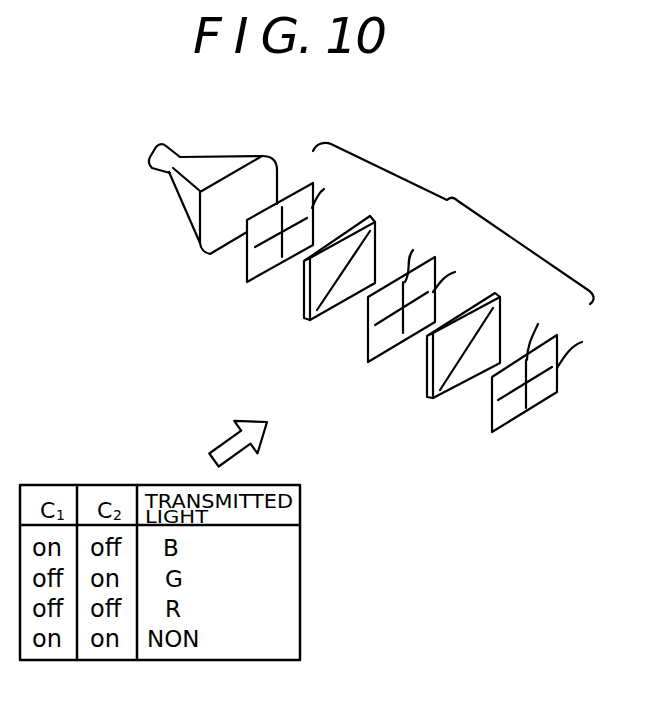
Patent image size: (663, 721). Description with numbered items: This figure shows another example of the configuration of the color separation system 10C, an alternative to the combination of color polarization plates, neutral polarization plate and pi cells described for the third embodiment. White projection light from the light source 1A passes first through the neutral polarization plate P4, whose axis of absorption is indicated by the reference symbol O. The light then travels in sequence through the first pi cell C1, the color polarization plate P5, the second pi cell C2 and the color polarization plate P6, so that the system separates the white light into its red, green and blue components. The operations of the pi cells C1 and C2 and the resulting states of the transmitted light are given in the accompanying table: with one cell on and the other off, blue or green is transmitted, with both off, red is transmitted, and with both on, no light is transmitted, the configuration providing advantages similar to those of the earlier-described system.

The light source 1A is at (231, 156).
The color separation system 10C is at (453, 223).
The neutral polarization plate P4 is at (247, 282).
The axis of absorption O is at (286, 200).
The pi cell C1 is at (304, 319).
The color polarization plate P5 is at (368, 361).
The pi cell C2 is at (430, 397).
The color polarization plate P6 is at (492, 432).